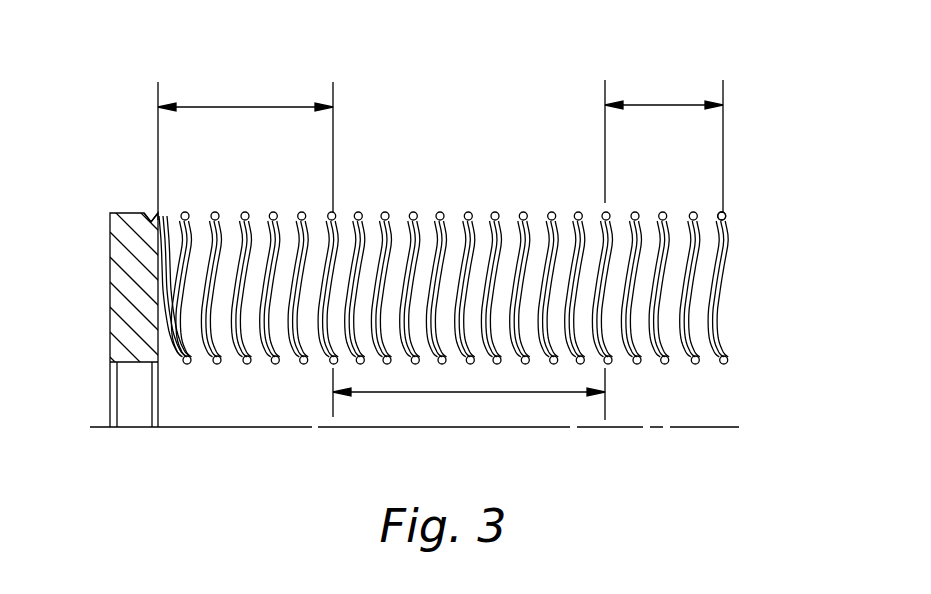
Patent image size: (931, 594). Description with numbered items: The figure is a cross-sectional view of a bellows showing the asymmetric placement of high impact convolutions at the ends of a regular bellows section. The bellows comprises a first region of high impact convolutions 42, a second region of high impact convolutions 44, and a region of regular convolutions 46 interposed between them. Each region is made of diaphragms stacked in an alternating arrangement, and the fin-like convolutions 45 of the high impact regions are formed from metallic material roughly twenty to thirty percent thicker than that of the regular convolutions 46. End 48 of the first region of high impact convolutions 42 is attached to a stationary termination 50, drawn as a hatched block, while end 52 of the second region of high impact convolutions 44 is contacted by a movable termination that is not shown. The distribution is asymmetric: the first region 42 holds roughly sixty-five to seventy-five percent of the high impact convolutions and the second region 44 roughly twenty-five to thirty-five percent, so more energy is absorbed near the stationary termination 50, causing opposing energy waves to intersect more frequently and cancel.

The first region of high impact convolutions 42 is at (273, 105).
The second region of high impact convolutions 44 is at (689, 103).
The corrugated fin strip 45 is at (385, 211).
The region of regular convolutions 46 is at (507, 392).
The end of first region of high impact convolutions 48 is at (155, 218).
The stationary termination 50 is at (118, 296).
The end of second region of high impact convolutions 52 is at (724, 214).